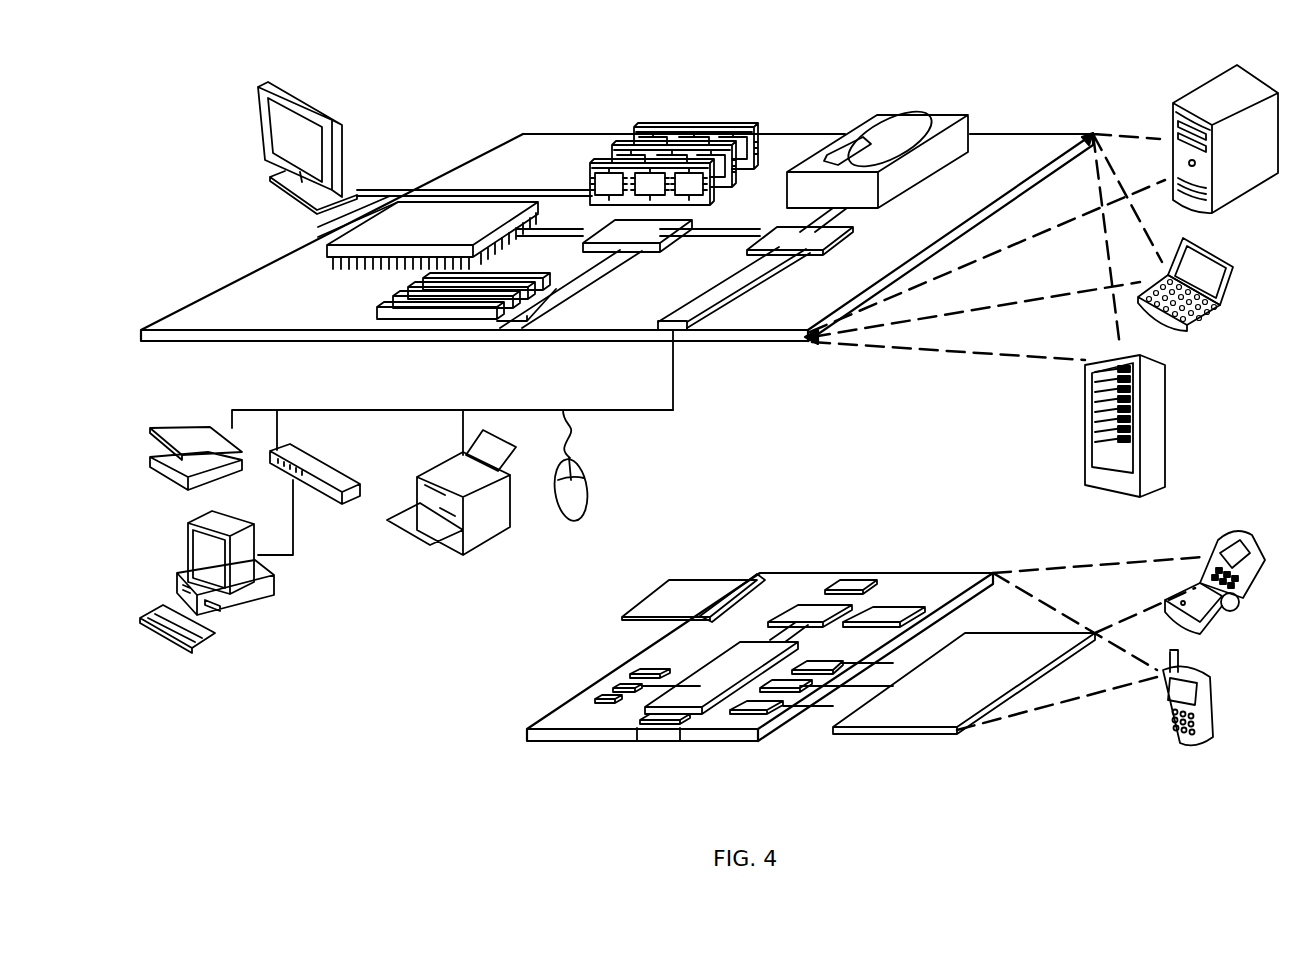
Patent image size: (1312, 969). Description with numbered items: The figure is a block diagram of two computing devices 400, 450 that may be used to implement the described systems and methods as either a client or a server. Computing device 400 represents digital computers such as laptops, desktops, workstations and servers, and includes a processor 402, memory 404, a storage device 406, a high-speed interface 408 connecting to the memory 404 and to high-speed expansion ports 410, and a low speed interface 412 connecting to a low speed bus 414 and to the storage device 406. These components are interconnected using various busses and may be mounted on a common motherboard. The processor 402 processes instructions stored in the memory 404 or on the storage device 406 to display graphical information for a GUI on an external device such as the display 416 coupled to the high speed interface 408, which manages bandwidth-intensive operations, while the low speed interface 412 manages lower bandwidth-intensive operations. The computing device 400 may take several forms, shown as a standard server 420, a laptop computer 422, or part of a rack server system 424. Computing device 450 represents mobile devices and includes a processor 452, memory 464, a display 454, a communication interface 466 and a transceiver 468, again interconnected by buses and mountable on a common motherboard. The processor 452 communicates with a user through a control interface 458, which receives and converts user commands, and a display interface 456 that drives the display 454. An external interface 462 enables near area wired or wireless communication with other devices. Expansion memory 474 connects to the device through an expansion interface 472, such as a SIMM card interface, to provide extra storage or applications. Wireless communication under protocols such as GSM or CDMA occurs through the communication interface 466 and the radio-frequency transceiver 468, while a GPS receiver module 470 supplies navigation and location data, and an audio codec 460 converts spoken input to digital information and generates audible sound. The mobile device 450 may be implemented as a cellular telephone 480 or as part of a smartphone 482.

The computing device 400 is at (451, 108).
The processor 402 is at (330, 245).
The memory 404 is at (643, 125).
The storage device 406 is at (864, 114).
The high-speed interface 408 is at (617, 233).
The high-speed expansion ports 410 is at (398, 304).
The low speed interface 412 is at (781, 230).
The low speed bus 414 is at (680, 329).
The display 416 is at (264, 84).
The standard server 420 is at (1173, 118).
The laptop computer 422 is at (1234, 256).
The rack server system 424 is at (1085, 448).
The computing device 450 is at (505, 737).
The processor 452 is at (693, 695).
The display 454 is at (923, 717).
The display interface 456 is at (763, 712).
The control interface 458 is at (792, 686).
The audio codec 460 is at (817, 663).
The external interface 462 is at (661, 738).
The memory 464 is at (610, 693).
The communication interface 466 is at (810, 607).
The transceiver 468 is at (885, 607).
The GPS receiver module 470 is at (861, 578).
The expansion interface 472 is at (738, 590).
The expansion memory 474 is at (672, 590).
The cellular telephone 480 is at (1217, 526).
The smartphone 482 is at (1163, 702).